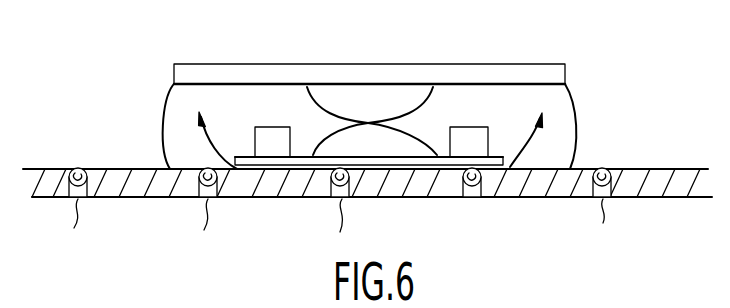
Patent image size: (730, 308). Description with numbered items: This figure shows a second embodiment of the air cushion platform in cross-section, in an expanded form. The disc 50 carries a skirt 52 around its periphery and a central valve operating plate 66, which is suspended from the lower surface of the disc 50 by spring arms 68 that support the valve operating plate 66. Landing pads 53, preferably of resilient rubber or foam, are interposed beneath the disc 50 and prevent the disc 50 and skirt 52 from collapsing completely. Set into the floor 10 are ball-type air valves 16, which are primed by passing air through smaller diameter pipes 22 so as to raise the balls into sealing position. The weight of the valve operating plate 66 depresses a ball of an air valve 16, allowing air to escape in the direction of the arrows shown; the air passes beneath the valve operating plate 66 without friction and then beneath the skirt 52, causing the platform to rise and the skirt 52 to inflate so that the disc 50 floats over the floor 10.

The floor 10 is at (117, 169).
The air valve 16 is at (348, 187).
The smaller diameter pipe 22 is at (473, 198).
The disc 50 is at (498, 60).
The skirt 52 is at (578, 108).
The landing pad 53 is at (483, 133).
The valve operating plate 66 is at (240, 162).
The spring arm 68 is at (408, 111).